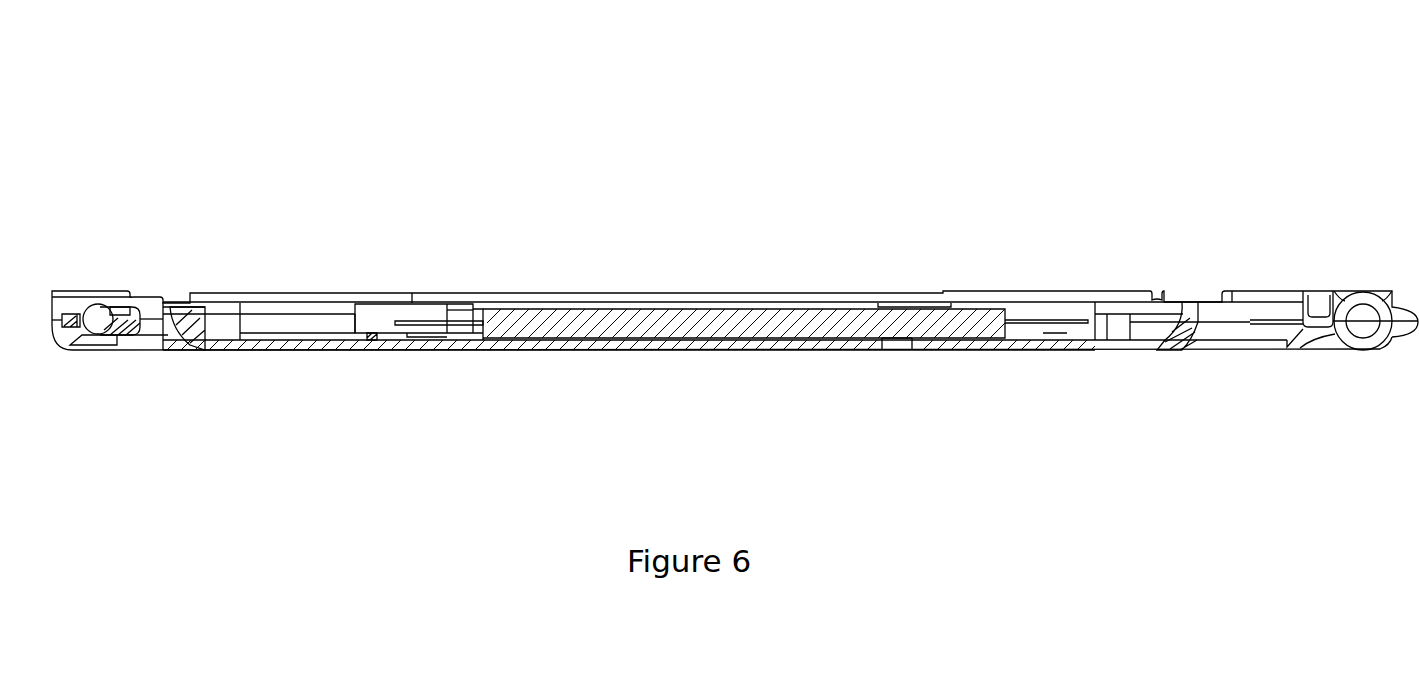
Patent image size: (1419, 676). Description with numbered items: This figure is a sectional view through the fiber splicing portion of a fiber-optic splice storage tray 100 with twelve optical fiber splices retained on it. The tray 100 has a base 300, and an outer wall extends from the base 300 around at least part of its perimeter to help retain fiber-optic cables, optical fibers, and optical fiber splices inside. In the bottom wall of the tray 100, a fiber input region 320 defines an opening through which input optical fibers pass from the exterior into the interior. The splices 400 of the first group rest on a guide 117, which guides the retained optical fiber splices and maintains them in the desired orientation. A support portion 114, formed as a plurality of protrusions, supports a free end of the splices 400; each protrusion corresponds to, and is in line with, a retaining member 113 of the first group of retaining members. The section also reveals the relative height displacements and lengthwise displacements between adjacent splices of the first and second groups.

The tray 100 is at (707, 157).
The retaining member 113 is at (460, 303).
The support portion 114 is at (362, 340).
The guide 117 is at (750, 340).
The base 300 is at (810, 351).
The fiber input region 320 is at (1357, 330).
The splices 400 is at (480, 333).